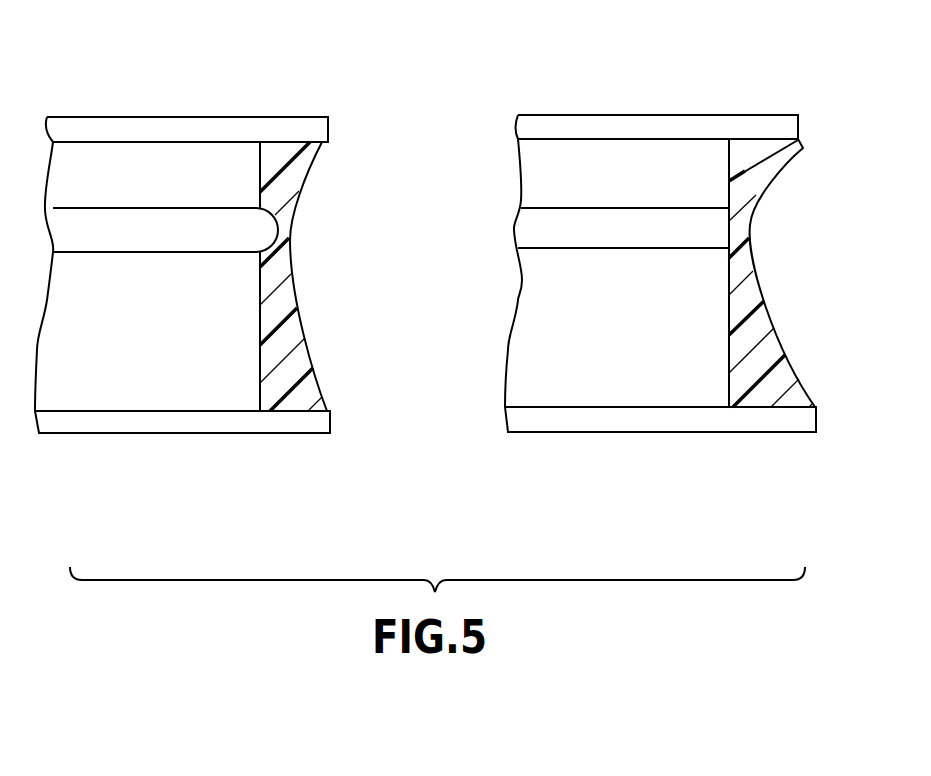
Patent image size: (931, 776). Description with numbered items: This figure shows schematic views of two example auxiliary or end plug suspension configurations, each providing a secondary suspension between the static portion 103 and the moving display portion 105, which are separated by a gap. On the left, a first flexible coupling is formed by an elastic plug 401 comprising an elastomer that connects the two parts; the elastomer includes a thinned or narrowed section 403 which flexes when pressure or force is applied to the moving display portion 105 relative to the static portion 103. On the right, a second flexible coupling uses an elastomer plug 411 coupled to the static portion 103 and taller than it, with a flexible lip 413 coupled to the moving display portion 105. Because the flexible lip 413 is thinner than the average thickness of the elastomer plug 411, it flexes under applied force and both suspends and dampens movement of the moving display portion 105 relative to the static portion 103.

The moving display portion 105 is at (174, 157).
The static portion 103 is at (128, 388).
The elastic plug 401 is at (283, 383).
The thinned or narrowed section 403 is at (293, 228).
The elastomer plug 411 is at (772, 388).
The flexible lip 413 is at (783, 165).